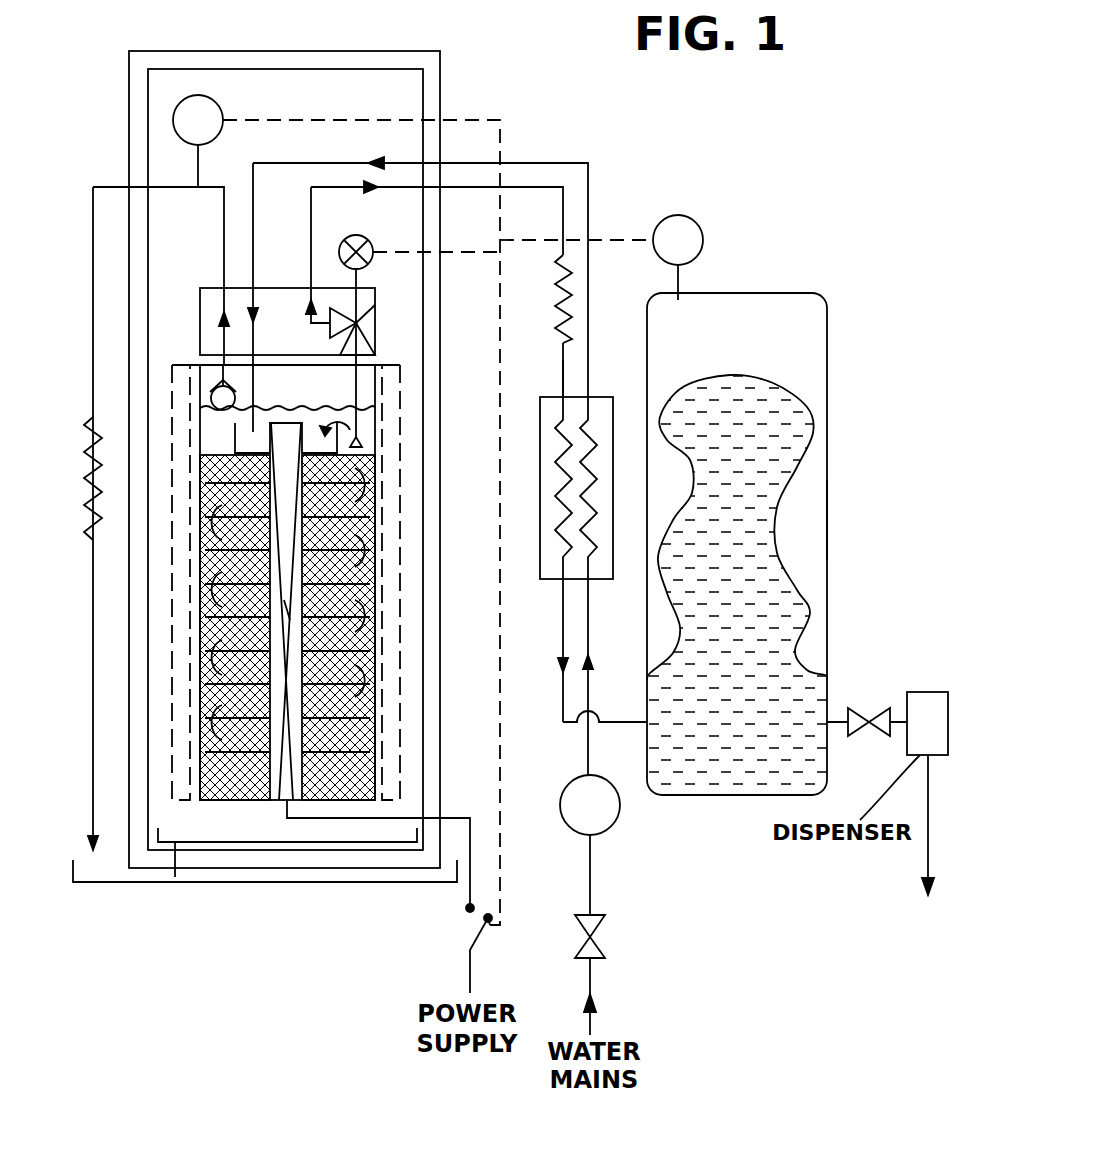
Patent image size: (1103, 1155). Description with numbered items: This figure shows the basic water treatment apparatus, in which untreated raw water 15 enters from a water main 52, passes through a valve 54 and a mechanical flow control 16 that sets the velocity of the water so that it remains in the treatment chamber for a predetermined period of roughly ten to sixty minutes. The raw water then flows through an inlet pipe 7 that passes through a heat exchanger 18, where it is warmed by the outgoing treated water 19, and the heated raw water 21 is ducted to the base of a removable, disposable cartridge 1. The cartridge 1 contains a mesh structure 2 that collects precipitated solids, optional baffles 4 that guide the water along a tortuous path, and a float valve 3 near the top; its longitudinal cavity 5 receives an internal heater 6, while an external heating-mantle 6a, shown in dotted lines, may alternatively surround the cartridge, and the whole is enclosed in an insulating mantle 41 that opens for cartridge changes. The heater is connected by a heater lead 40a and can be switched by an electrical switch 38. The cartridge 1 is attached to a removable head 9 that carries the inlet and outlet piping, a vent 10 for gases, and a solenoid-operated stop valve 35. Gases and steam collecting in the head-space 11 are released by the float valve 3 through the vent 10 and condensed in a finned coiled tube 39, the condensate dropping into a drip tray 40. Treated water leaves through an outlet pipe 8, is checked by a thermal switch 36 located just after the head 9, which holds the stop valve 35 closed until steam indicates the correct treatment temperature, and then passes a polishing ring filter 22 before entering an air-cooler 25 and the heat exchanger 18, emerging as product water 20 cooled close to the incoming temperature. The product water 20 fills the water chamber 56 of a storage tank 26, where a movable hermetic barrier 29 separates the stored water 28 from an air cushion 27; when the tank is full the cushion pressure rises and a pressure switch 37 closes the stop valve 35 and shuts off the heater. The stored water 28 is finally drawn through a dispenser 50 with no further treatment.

The cartridge 1 is at (220, 800).
The mesh structure 2 is at (365, 527).
The float valve 3 is at (208, 396).
The baffles 4 is at (372, 623).
The longitudinal cavity 5 is at (283, 802).
The internal heater 6 is at (293, 603).
The external heating-mantle 6a is at (397, 738).
The inlet pipe 7 is at (200, 727).
The outlet pipe 8 is at (362, 445).
The removable head 9 is at (275, 288).
The vent 10 is at (222, 215).
The head-space 11 is at (312, 378).
The untreated raw water 15 is at (593, 990).
The mechanical flow control 16 is at (610, 832).
The heat exchanger 18 is at (603, 495).
The outgoing treated water 19 is at (565, 370).
The product water 20 is at (562, 697).
The heated raw water 21 is at (557, 163).
The polishing ring filter 22 is at (245, 433).
The air-cooler 25 is at (570, 305).
The storage tank 26 is at (828, 505).
The air cushion 27 is at (780, 305).
The stored water 28 is at (717, 773).
The movable hermetic barrier 29 is at (808, 598).
The solenoid-operated stop valve 35 is at (360, 320).
The thermal switch 36 is at (173, 121).
The pressure switch 37 is at (682, 215).
The electrical switch 38 is at (475, 942).
The finned coiled tube 39 is at (104, 452).
The drip tray 40 is at (93, 883).
The heater lead 40a is at (340, 845).
The insulating mantle 41 is at (153, 868).
The dispenser 50 is at (908, 700).
The water main 52 is at (593, 1025).
The valve 54 is at (605, 937).
The water chamber 56 is at (775, 765).